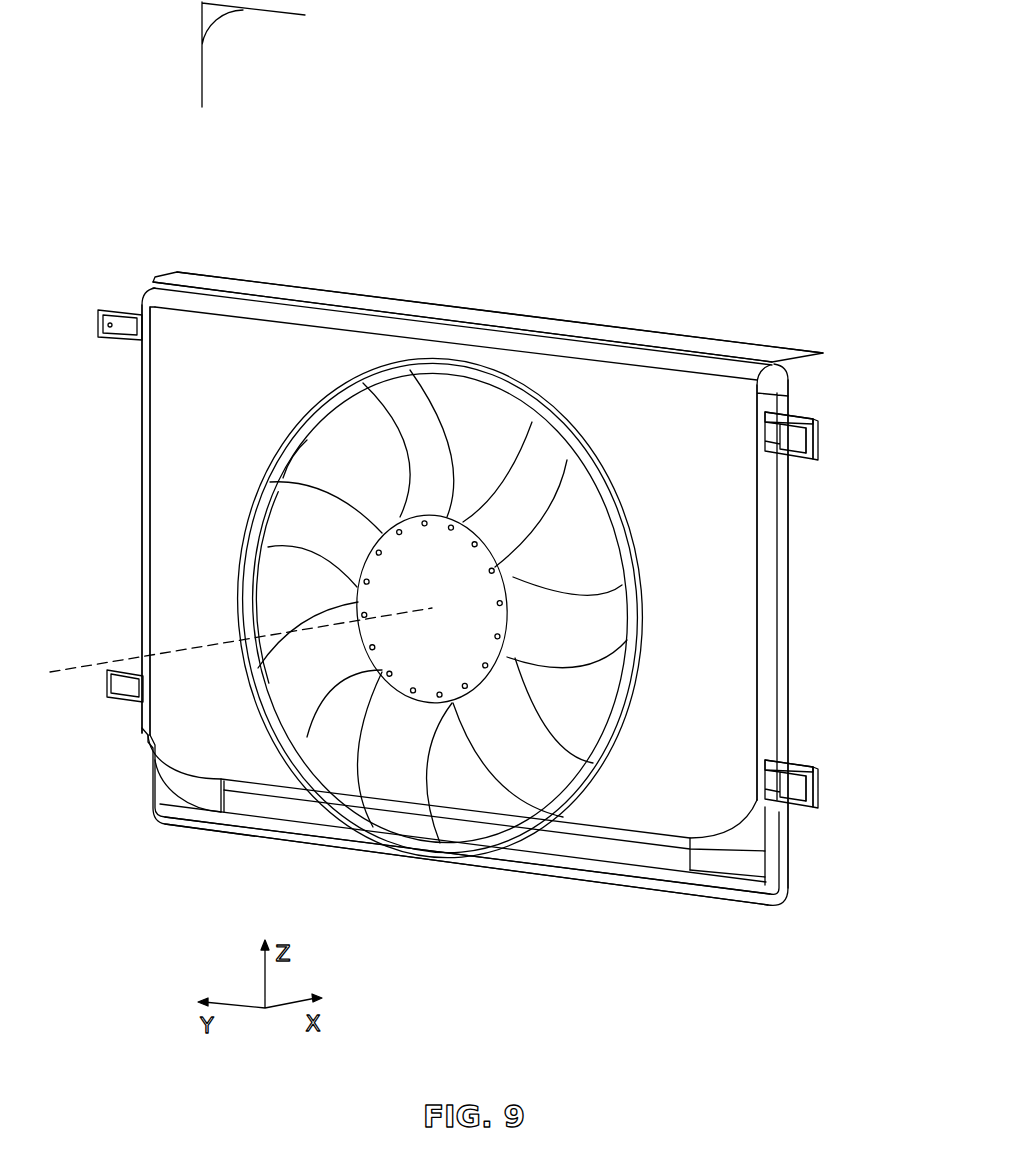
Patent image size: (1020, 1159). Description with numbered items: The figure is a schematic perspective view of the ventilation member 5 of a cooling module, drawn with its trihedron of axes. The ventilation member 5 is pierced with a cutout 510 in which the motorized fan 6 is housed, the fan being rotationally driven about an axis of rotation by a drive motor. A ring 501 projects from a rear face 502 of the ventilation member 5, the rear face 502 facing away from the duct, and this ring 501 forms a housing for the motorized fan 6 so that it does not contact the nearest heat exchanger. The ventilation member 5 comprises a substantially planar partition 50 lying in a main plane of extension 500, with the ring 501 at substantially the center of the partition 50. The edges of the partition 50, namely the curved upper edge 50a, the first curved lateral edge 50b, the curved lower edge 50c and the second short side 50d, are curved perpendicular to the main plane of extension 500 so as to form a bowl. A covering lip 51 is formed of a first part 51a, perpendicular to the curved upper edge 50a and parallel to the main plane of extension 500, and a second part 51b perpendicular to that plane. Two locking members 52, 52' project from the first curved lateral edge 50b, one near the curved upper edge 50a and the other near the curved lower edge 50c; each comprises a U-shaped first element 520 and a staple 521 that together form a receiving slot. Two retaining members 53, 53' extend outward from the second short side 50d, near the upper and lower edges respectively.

The ventilation member 5 is at (652, 295).
The motorized fan 6 is at (297, 693).
The partition 50 is at (172, 402).
The curved upper edge 50a is at (167, 302).
The first curved lateral edge 50b is at (787, 582).
The curved lower edge 50c is at (668, 893).
The second short side 50d is at (143, 543).
The covering lip 51 is at (578, 320).
The first part of the covering lip 51a is at (193, 288).
The second part of the covering lip 51b is at (262, 287).
The first locking member 52 is at (838, 427).
The second locking member 52' is at (839, 775).
The first retaining member 53 is at (88, 350).
The second retaining member 53' is at (86, 706).
The main plane of extension 500 is at (230, 37).
The ring 501 is at (643, 627).
The rear face 502 is at (710, 803).
The cutout 510 is at (338, 430).
The first element 520 is at (800, 412).
The staple 521 is at (818, 428).